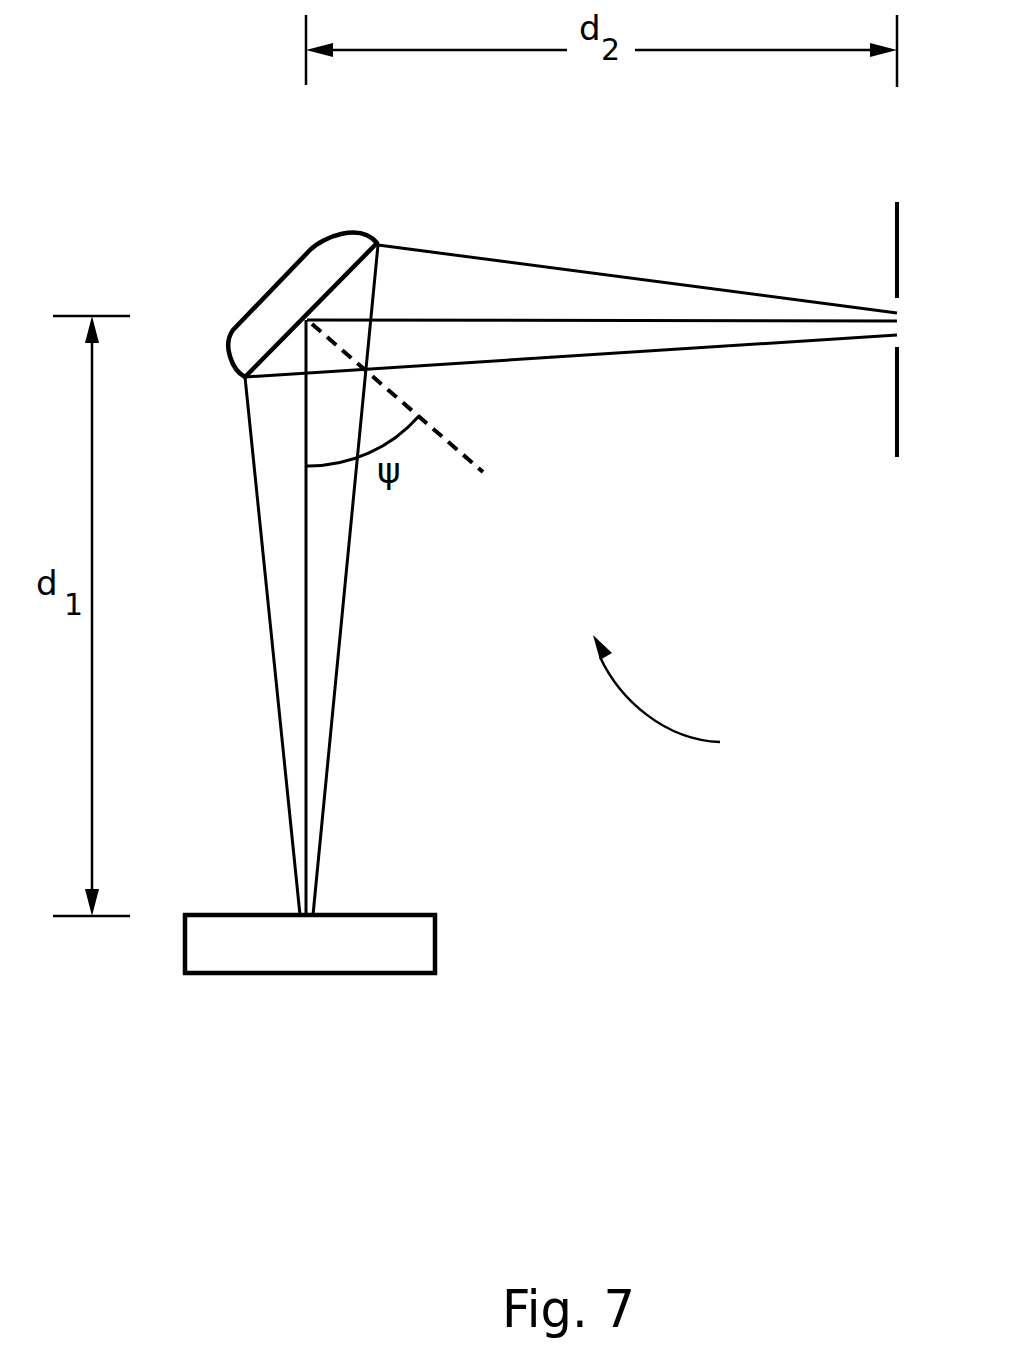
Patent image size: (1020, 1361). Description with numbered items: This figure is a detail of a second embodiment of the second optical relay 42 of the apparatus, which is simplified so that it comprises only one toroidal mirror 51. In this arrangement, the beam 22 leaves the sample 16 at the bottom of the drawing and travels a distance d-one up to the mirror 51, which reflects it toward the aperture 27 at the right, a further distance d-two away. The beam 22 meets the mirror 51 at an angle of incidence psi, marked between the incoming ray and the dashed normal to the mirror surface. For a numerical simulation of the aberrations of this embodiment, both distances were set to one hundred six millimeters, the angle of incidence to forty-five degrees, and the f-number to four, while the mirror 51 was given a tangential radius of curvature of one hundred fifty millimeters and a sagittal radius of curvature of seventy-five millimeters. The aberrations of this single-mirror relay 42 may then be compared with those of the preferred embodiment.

The sample 16 is at (437, 946).
The beam 22 is at (467, 257).
The aperture 27 is at (897, 344).
The optical relay 42 is at (681, 699).
The toroidal mirror 51 is at (288, 258).